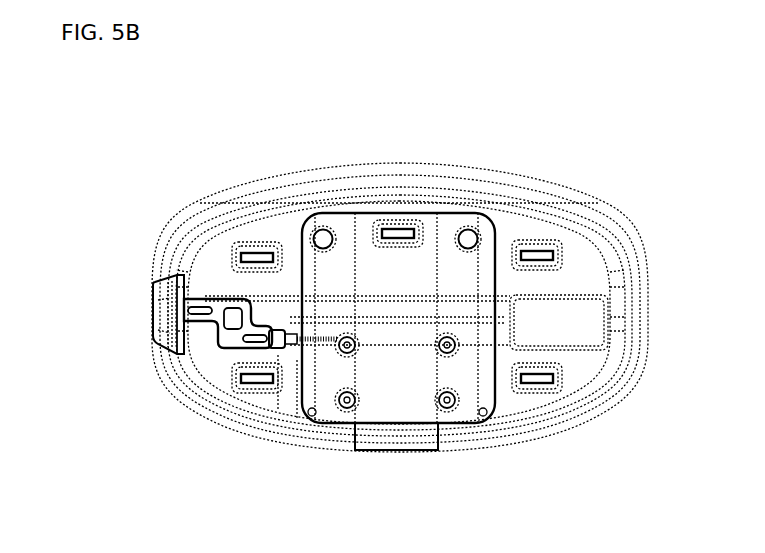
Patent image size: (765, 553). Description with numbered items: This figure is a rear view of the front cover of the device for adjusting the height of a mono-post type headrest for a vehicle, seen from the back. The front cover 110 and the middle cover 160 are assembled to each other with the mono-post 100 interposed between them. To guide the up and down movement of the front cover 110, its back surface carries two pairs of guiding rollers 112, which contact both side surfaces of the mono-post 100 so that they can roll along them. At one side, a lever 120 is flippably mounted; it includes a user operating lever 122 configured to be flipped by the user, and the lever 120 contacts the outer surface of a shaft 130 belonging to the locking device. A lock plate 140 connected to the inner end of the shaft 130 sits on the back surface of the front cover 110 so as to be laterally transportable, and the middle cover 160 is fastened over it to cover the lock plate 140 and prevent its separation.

The mono-post 100 is at (397, 445).
The front cover 110 is at (600, 212).
The guiding rollers 112 is at (340, 352).
The lever 120 is at (158, 285).
The user operating lever 122 is at (163, 318).
The shaft 130 is at (217, 298).
The lock plate 140 is at (303, 326).
The middle cover 160 is at (450, 217).